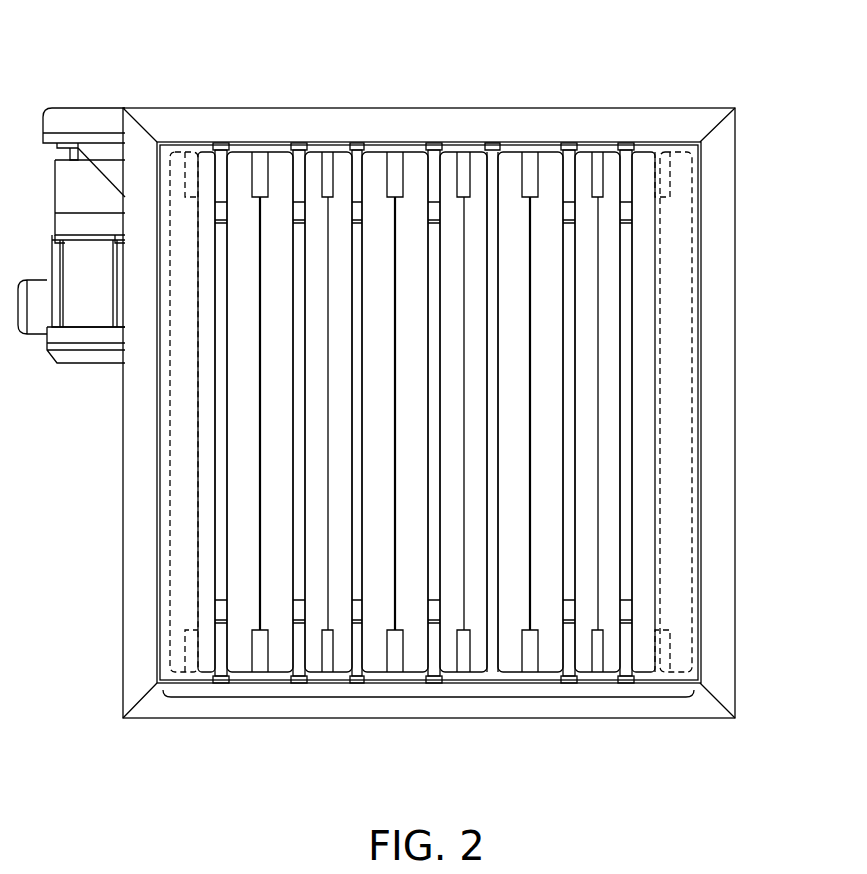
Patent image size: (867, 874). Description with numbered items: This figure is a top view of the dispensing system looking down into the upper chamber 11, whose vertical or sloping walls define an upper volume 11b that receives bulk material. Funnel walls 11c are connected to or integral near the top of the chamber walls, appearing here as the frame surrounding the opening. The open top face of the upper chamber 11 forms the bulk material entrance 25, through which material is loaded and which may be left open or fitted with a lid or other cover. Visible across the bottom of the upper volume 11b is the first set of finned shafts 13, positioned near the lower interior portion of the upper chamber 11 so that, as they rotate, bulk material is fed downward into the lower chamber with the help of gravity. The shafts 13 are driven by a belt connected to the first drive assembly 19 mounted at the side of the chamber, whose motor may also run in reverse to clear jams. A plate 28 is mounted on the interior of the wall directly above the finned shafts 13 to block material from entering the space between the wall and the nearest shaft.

The upper chamber 11 is at (722, 56).
The upper volume 11b is at (493, 207).
The funnel walls 11c is at (298, 132).
The first set of finned shafts 13 is at (428, 706).
The first drive assembly 19 is at (93, 100).
The bulk material entrance 25 is at (699, 640).
The plate 28 is at (199, 568).